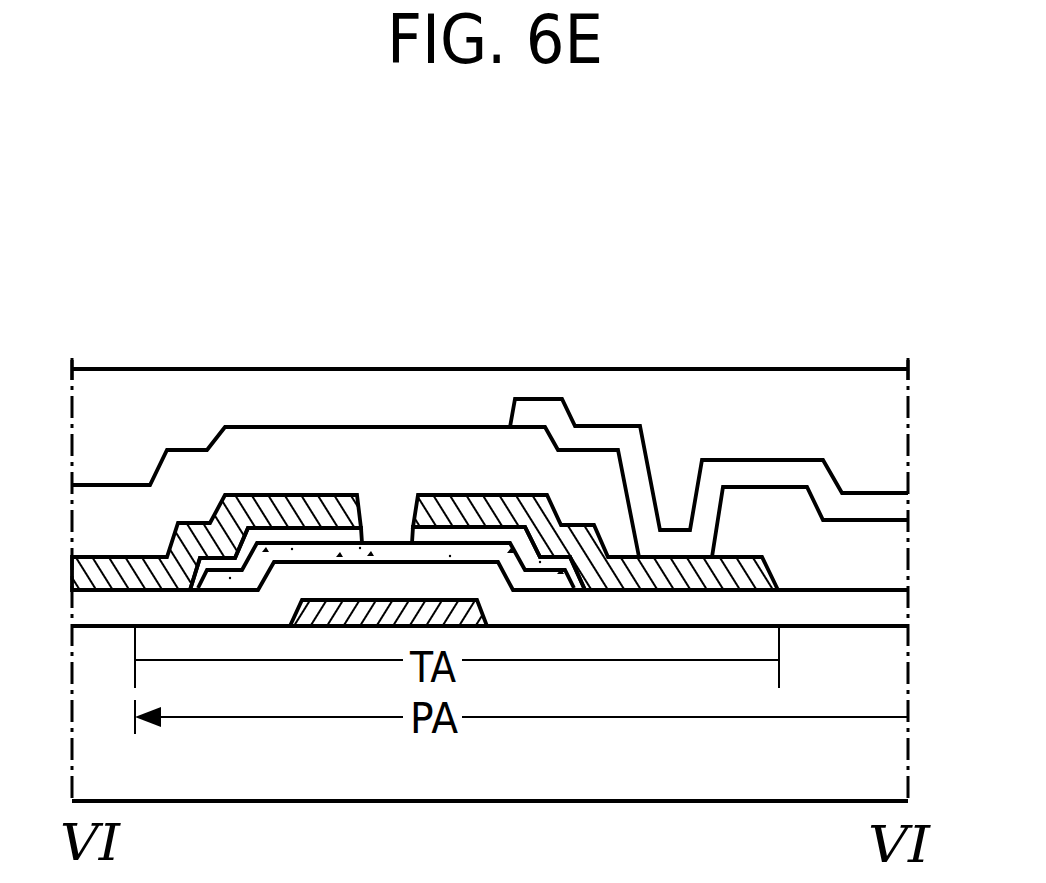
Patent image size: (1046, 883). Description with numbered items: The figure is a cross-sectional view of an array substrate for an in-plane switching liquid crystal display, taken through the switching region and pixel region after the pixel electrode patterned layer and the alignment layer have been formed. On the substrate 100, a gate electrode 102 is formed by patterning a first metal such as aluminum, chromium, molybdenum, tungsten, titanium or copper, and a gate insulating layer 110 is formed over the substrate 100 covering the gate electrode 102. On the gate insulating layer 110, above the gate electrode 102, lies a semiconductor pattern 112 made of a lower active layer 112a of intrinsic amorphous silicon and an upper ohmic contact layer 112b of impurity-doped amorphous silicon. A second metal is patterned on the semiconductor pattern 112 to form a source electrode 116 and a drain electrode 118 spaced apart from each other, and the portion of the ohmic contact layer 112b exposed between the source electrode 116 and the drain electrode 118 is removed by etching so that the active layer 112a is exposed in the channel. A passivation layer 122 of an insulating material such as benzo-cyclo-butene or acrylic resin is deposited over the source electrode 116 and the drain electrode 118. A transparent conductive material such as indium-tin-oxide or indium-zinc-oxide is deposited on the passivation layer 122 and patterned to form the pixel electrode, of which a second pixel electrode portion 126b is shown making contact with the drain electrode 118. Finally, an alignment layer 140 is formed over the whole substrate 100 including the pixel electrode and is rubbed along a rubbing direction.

The substrate 100 is at (168, 781).
The gate electrode 102 is at (380, 608).
The gate insulating layer 110 is at (295, 577).
The semiconductor pattern 112 is at (577, 225).
The active layer 112a is at (463, 550).
The ohmic contact layer 112b is at (518, 537).
The source electrode 116 is at (203, 522).
The drain electrode 118 is at (592, 522).
The passivation layer 122 is at (107, 485).
The second pixel electrode portion 126b is at (777, 460).
The alignment layer 140 is at (855, 400).